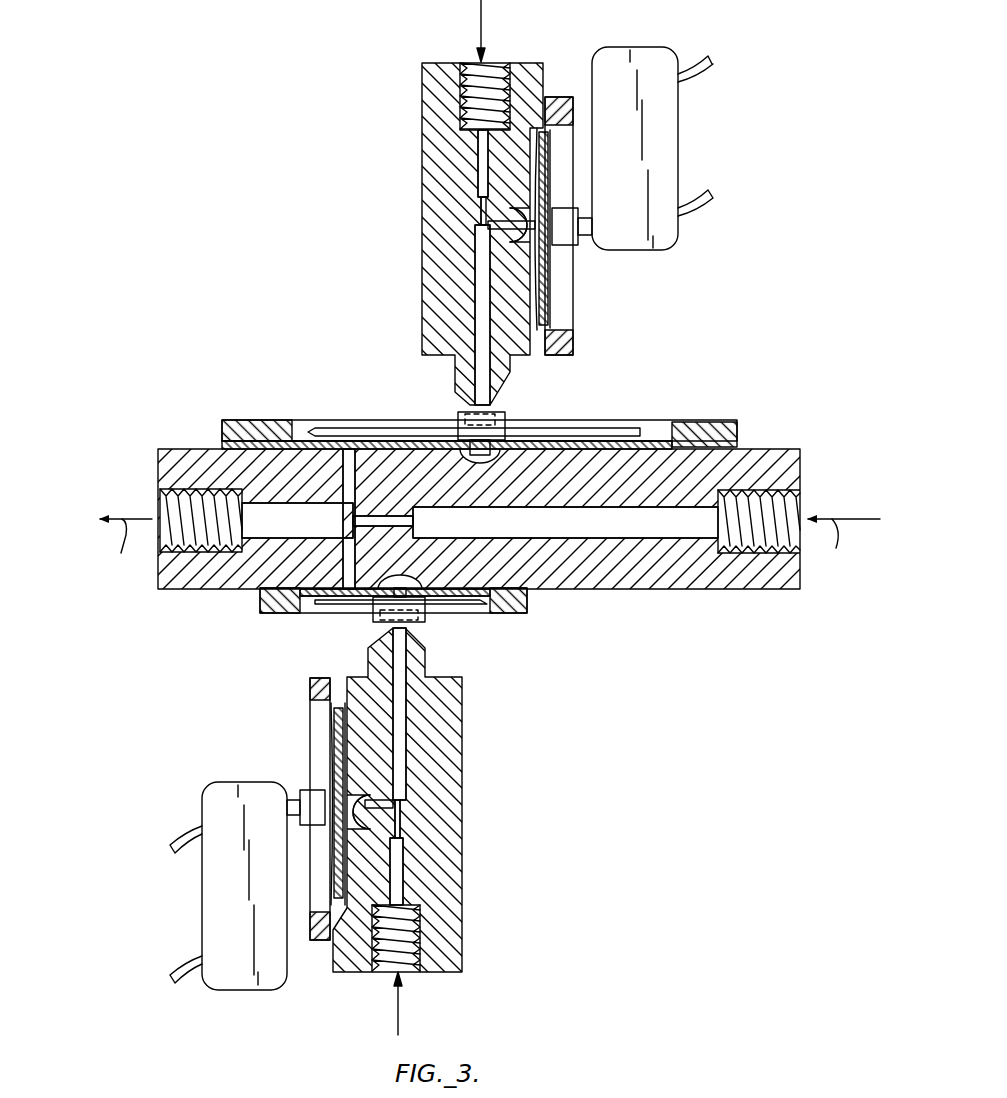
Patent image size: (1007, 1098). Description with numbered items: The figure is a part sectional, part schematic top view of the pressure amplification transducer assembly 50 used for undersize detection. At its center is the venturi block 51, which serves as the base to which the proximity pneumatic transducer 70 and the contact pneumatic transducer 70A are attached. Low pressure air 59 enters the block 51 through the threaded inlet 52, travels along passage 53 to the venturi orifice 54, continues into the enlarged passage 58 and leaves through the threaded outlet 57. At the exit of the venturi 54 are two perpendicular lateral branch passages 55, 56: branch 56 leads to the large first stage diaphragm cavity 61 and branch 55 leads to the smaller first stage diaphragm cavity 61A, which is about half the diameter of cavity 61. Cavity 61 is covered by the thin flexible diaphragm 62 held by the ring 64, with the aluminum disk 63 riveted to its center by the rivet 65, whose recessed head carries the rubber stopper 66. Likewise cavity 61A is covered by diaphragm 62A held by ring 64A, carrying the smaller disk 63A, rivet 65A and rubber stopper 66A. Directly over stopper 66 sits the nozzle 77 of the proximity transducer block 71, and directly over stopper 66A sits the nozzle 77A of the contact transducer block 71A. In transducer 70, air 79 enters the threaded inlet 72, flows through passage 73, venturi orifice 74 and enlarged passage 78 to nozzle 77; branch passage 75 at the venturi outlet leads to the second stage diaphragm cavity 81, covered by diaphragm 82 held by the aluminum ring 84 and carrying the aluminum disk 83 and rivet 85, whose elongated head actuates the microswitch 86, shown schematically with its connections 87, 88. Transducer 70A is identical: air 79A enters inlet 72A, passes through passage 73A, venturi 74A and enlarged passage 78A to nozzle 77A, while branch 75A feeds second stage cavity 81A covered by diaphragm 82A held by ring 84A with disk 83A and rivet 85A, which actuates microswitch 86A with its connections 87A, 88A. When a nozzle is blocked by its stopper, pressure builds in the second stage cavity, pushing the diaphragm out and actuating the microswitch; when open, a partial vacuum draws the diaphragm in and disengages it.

The pressure amplification transducer assembly 50 is at (800, 168).
The central venturi block 51 is at (801, 449).
The inlet 52 is at (808, 500).
The passage 53 is at (683, 528).
The venturi orifice 54 is at (330, 463).
The lateral branch passage 55 is at (350, 555).
The lateral branch passage 56 is at (350, 490).
The outlet 57 is at (150, 548).
The enlarged passage 58 is at (337, 520).
The low pressure air 59 is at (483, 548).
The first stage diaphragm cavity 61 is at (680, 444).
The diaphragm 62 is at (620, 438).
The aluminum disk 63 is at (566, 434).
The ring 64 is at (722, 428).
The rivet 65 is at (510, 432).
The rubber stopper 66 is at (475, 412).
The proximity pneumatic transducer 70 is at (507, 202).
The proximity transducer block 71 is at (445, 168).
The threaded inlet 72 is at (483, 63).
The passage 73 is at (478, 140).
The venturi orifice 74 is at (488, 228).
The branch passage 75 is at (512, 238).
The nozzle 77 is at (490, 415).
The enlarged passage 78 is at (480, 285).
The air 79 is at (484, 14).
The second stage diaphragm cavity 81 is at (540, 278).
The diaphragm 82 is at (551, 322).
The aluminum disk 83 is at (546, 300).
The aluminum ring 84 is at (556, 100).
The rivet 85 is at (566, 246).
The microswitch 86 is at (670, 125).
The inlet tube 87 is at (712, 70).
The outlet tube 88 is at (706, 212).
The first stage diaphragm cavity 61A is at (478, 600).
The diaphragm 62A is at (468, 602).
The aluminum disk 63A is at (460, 608).
The ring 64A is at (528, 610).
The rivet 65A is at (376, 618).
The rubber stopper 66A is at (430, 635).
The contact pneumatic transducer 70A is at (380, 832).
The contact transducer block 71A is at (452, 750).
The threaded inlet 72A is at (408, 974).
The passage 73A is at (400, 855).
The venturi orifice 74A is at (400, 804).
The branch passage 75A is at (385, 806).
The nozzle 77A is at (393, 628).
The enlarged passage 78A is at (455, 732).
The air 79A is at (400, 1020).
The second stage diaphragm cavity 81A is at (334, 706).
The diaphragm 82A is at (340, 730).
The aluminum disk 83A is at (338, 748).
The aluminum ring 84A is at (318, 688).
The rivet 85A is at (309, 795).
The microswitch 86A is at (210, 876).
The inlet tube 87A is at (172, 840).
The outlet tube 88A is at (172, 974).